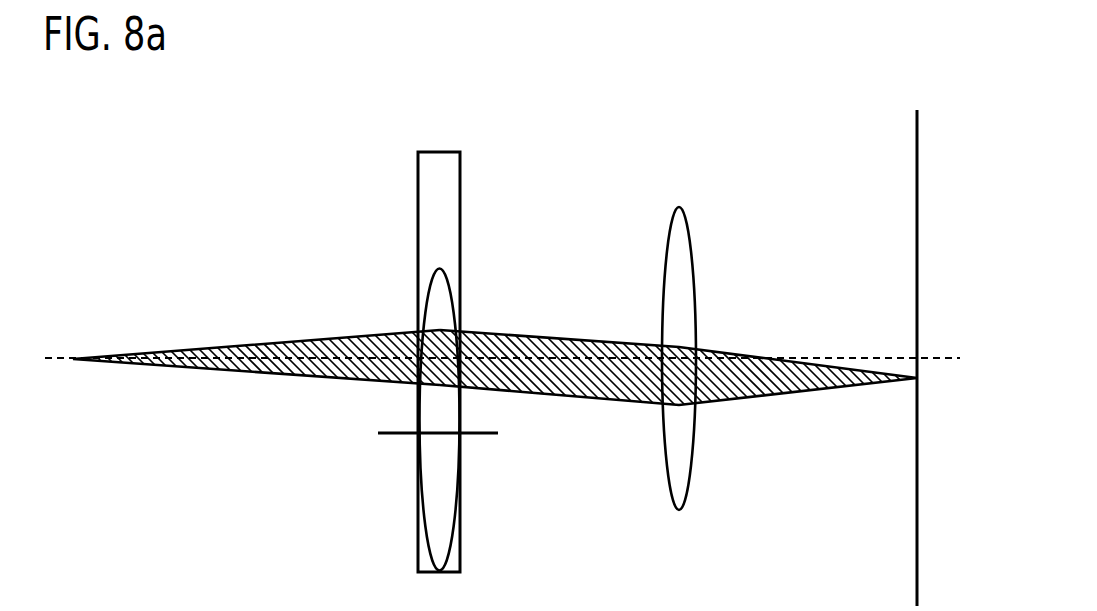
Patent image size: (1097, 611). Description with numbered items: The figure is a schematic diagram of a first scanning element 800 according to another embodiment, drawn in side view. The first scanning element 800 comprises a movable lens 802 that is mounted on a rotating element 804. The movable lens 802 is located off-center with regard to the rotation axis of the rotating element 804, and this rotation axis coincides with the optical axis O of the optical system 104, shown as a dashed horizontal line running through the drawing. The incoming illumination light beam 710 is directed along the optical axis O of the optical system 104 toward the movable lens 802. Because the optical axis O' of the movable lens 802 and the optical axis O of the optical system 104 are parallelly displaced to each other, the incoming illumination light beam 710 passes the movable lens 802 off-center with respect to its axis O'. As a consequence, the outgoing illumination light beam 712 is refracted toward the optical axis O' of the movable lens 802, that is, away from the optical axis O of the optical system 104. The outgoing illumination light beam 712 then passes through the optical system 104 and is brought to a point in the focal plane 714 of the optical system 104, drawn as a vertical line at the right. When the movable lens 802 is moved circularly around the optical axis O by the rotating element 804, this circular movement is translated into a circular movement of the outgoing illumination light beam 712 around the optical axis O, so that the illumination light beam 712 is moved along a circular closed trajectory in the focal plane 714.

The first scanning element 800 is at (479, 318).
The movable lens 802 is at (449, 553).
The rotating element 804 is at (460, 200).
The incoming illumination light beam 710 is at (318, 378).
The outgoing illumination light beam 712 is at (572, 400).
The optical system 104 is at (692, 470).
The focal plane 714 is at (916, 525).
The optical axis of the optical system O is at (502, 395).
The optical axis of the movable lens O' is at (438, 467).